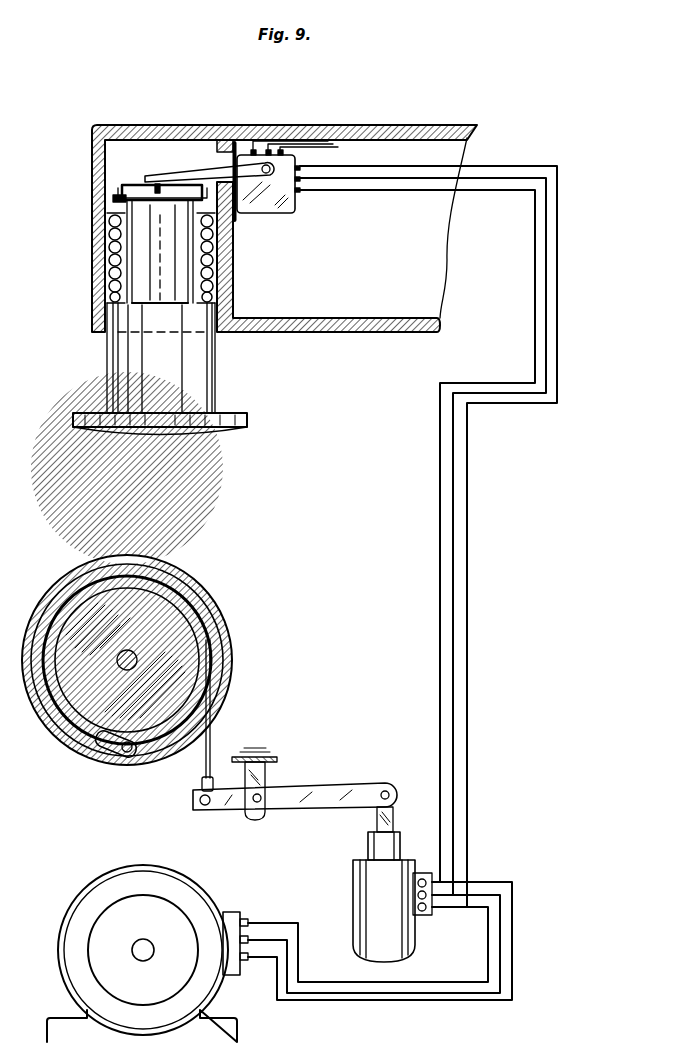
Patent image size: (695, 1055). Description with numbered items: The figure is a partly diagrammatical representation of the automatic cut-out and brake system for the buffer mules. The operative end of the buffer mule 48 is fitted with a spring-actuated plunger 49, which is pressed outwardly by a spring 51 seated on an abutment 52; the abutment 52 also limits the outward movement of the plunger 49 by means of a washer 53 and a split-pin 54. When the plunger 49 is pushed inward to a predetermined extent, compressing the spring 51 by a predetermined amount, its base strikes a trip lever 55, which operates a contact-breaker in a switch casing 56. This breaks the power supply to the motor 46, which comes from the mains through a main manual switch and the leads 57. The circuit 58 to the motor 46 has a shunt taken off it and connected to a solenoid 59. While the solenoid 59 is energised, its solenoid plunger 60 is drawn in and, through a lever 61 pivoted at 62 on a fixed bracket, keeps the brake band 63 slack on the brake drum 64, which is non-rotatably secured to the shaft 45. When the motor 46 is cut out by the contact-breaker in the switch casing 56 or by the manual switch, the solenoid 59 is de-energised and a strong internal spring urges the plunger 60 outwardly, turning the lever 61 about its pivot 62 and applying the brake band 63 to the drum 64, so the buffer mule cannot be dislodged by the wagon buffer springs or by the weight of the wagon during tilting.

The shaft 45 is at (134, 652).
The motor 46 is at (175, 878).
The buffer mule 48 is at (357, 318).
The plunger 49 is at (163, 413).
The spring 51 is at (107, 252).
The abutment 52 is at (107, 190).
The washer 53 is at (118, 184).
The split-pin 54 is at (150, 183).
The trip lever 55 is at (200, 172).
The switch casing 56 is at (282, 210).
The leads 57 is at (338, 147).
The circuit 58 is at (468, 563).
The solenoid 59 is at (357, 876).
The solenoid plunger 60 is at (394, 818).
The lever 61 is at (308, 792).
The pivot 62 is at (253, 814).
The brake band 63 is at (212, 752).
The brake drum 64 is at (158, 718).